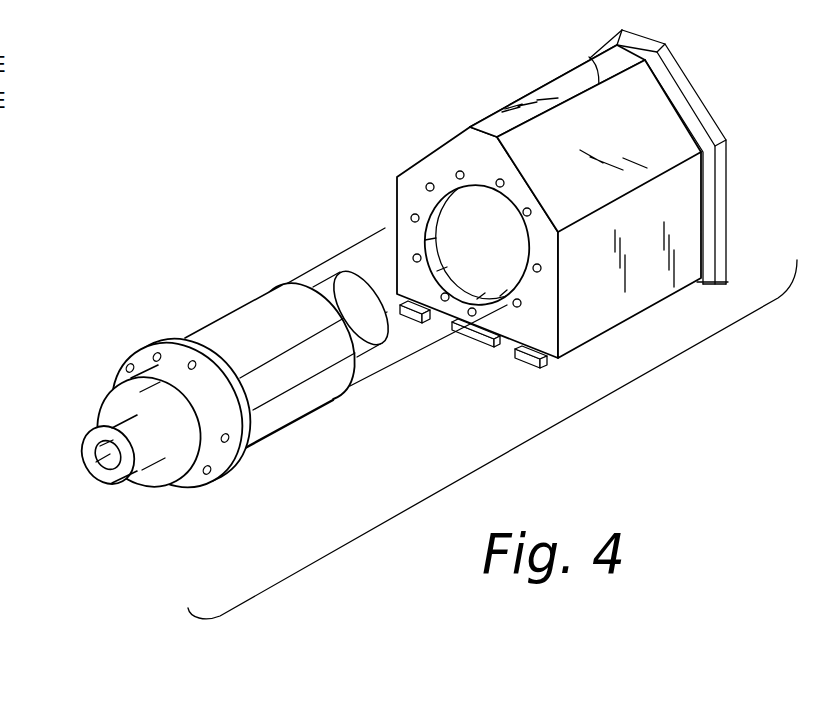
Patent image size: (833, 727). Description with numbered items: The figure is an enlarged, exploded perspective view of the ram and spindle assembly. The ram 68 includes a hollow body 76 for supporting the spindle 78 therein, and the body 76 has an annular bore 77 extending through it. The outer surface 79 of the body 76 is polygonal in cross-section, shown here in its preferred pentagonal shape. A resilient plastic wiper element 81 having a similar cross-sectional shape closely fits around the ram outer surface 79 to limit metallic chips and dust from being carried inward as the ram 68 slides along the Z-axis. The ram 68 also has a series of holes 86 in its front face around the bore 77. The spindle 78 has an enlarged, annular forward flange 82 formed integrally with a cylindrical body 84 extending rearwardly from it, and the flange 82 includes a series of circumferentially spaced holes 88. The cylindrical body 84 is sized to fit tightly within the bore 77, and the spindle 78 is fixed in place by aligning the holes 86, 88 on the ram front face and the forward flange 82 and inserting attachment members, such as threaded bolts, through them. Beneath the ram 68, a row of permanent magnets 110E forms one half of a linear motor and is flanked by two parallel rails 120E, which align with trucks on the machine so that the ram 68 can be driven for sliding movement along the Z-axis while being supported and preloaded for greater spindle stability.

The ram 68 is at (460, 95).
The hollow body 76 is at (589, 57).
The annular bore 77 is at (457, 218).
The spindle 78 is at (198, 303).
The outer surface 79 is at (688, 206).
The resilient plastic wiper element 81 is at (685, 89).
The annular forward flange 82 is at (127, 365).
The cylindrical body 84 is at (312, 388).
The holes 86 is at (458, 174).
The circumferentially spaced holes 88 is at (225, 444).
The permanent magnets 110E is at (474, 333).
The rails 120E is at (530, 368).